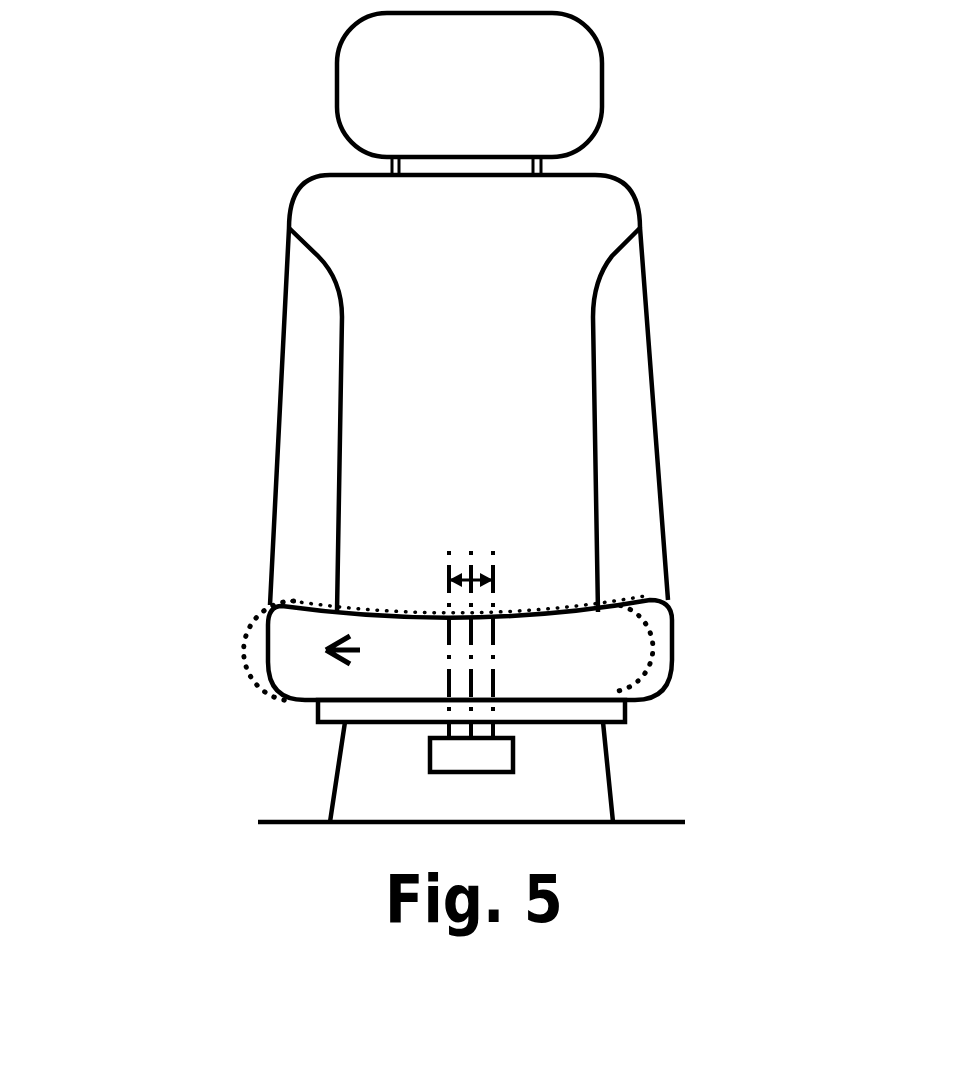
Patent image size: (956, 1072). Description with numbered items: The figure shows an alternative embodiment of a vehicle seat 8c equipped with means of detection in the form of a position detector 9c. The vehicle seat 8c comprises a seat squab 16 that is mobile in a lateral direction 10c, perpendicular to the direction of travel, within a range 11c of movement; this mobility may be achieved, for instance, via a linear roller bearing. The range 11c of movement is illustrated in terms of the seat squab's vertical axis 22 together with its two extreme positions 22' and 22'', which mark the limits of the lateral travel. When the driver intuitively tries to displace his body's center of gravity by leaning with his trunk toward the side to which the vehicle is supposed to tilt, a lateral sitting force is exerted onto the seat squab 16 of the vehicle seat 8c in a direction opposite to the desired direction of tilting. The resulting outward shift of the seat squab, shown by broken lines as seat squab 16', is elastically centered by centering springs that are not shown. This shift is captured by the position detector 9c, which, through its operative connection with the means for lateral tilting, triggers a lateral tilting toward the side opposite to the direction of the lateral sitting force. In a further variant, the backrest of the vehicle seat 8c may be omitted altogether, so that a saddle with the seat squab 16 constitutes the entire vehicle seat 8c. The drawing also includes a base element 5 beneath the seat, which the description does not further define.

The vehicle seat 8c is at (155, 65).
The seat squab 16 is at (398, 635).
The seat squab (outwardly shifted position) 16' is at (382, 597).
The lateral direction 10c is at (340, 657).
The extreme position of vertical axis 22' is at (655, 586).
The vertical axis of seat squab 22 is at (659, 629).
The extreme position of vertical axis 22'' is at (684, 644).
The range of movement 11c is at (460, 572).
The position detector 9c is at (485, 755).
The vehicle floor 5 is at (277, 817).